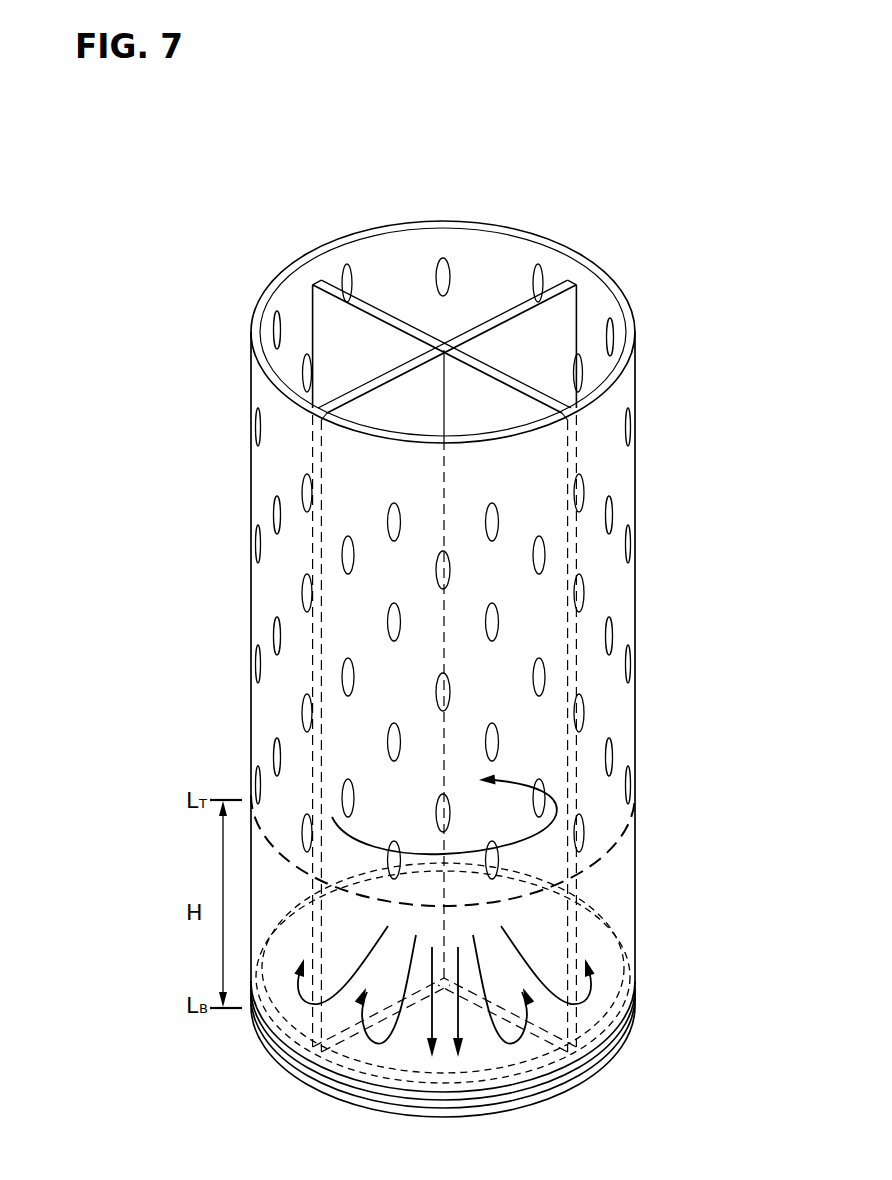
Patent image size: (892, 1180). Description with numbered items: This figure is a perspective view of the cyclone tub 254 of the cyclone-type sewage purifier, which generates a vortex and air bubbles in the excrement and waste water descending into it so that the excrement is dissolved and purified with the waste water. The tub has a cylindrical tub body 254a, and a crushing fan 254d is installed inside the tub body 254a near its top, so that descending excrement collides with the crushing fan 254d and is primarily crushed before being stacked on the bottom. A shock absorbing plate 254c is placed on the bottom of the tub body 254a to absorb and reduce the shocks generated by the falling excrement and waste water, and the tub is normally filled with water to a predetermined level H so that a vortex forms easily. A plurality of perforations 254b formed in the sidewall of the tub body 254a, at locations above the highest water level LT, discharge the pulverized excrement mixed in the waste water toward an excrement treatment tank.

The filter 254 is at (576, 203).
The tub body 254a is at (253, 477).
The perforations 254b is at (303, 590).
The shock absorbing plate 254c is at (593, 1048).
The crushing fan 254d is at (553, 327).